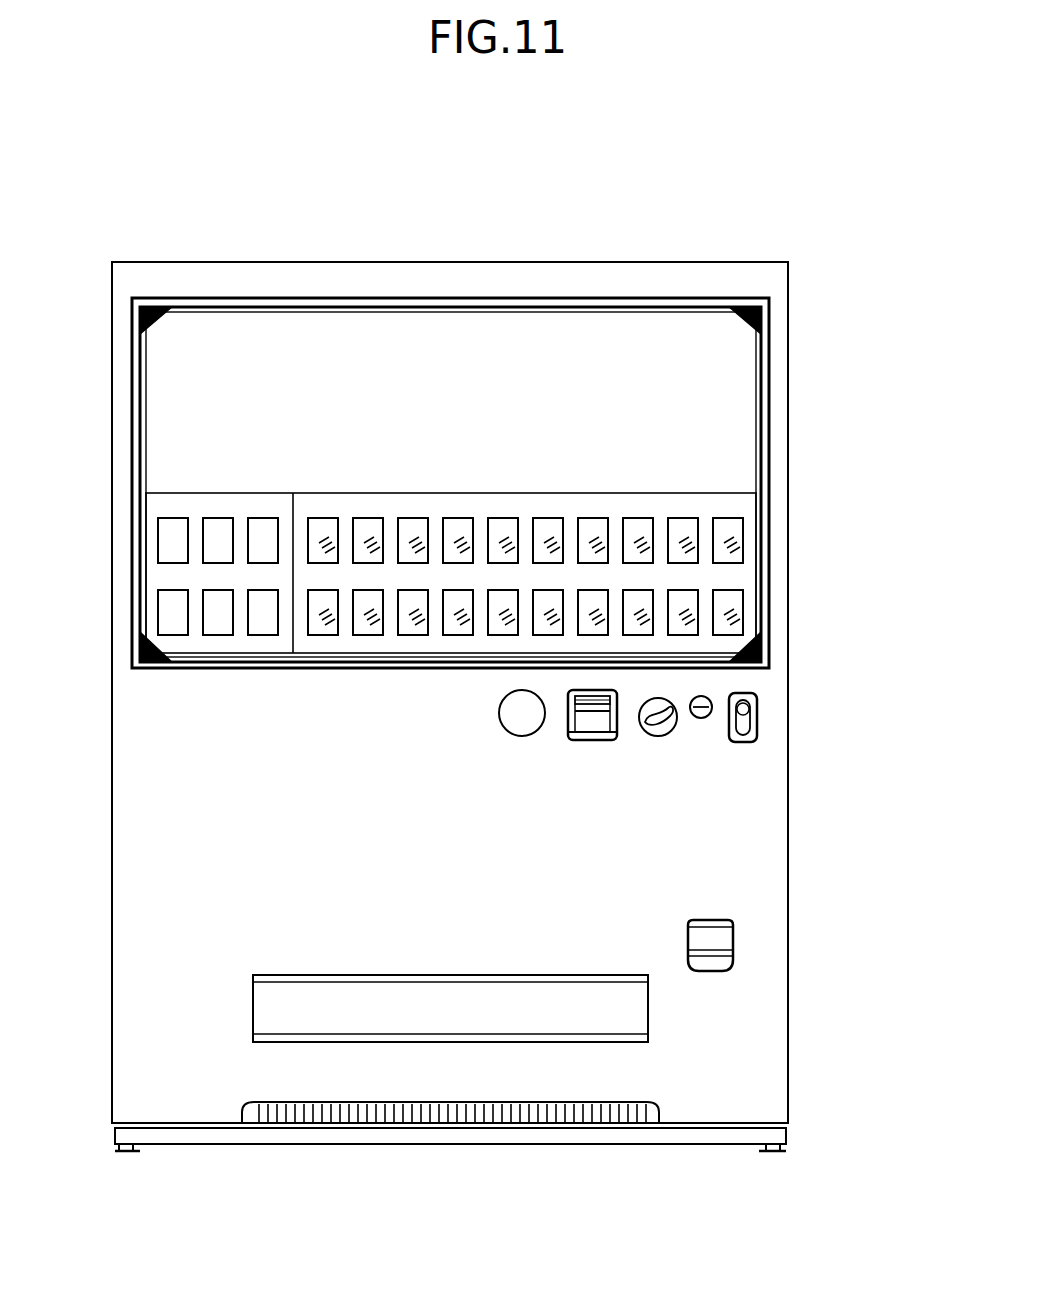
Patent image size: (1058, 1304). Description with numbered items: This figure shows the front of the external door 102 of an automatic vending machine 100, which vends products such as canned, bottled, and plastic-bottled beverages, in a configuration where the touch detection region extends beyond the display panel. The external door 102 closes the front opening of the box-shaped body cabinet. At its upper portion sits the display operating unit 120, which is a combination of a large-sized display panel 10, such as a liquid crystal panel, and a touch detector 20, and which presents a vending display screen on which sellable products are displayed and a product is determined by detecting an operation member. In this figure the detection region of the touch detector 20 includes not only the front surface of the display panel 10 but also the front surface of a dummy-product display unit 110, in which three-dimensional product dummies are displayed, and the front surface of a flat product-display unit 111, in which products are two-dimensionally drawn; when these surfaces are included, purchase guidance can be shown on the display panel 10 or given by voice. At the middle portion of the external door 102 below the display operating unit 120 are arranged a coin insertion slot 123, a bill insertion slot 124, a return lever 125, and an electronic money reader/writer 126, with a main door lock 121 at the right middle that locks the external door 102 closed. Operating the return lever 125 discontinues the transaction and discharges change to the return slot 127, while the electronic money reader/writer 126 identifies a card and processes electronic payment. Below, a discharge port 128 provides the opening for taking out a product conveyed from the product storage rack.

The automatic vending machine 100 is at (683, 186).
The external door 102 is at (780, 378).
The display operating unit 120 is at (555, 426).
The touch detector 20 is at (424, 298).
The display panel 10 is at (738, 434).
The dummy-product display unit 110 is at (740, 508).
The flat product-display unit 111 is at (158, 503).
The main door lock 121 is at (757, 717).
The coin insertion slot 123 is at (707, 697).
The bill insertion slot 124 is at (600, 690).
The return lever 125 is at (666, 734).
The electronic money reader/writer 126 is at (532, 734).
The return slot 127 is at (733, 935).
The discharge port 128 is at (648, 1007).